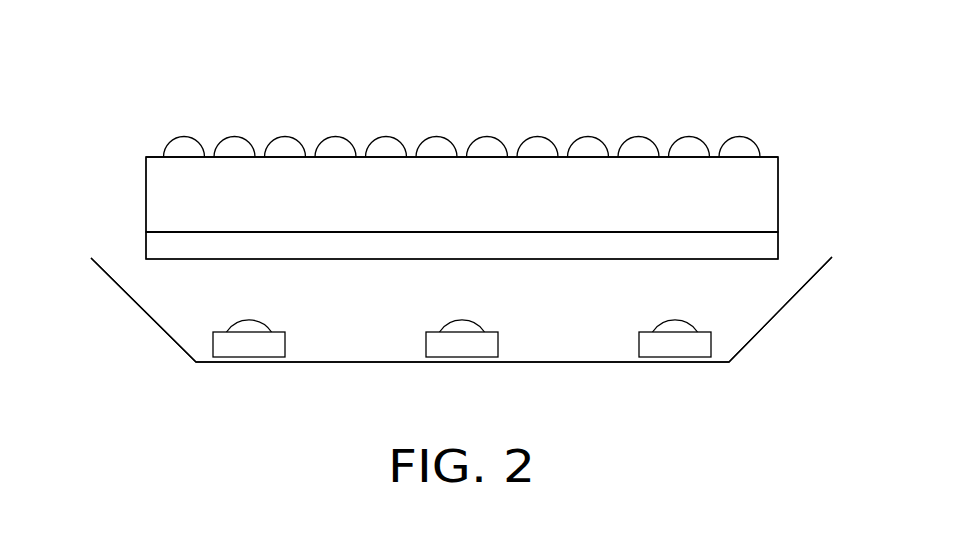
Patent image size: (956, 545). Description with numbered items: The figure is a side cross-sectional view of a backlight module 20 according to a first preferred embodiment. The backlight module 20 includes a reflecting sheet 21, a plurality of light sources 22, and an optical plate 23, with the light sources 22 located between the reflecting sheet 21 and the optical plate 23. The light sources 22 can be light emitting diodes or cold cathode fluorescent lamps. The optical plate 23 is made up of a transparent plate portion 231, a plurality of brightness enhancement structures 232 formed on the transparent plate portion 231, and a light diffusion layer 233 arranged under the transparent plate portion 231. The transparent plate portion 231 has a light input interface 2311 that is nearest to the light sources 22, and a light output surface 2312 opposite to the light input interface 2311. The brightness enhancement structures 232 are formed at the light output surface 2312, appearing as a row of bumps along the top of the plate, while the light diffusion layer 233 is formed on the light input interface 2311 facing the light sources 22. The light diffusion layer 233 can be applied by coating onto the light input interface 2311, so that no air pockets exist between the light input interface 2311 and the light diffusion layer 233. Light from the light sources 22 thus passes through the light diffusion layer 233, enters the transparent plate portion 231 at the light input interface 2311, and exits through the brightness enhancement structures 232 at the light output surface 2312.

The backlight module 20 is at (461, 193).
The reflecting sheet 21 is at (313, 362).
The light sources 22 is at (678, 348).
The optical plate 23 is at (135, 175).
The transparent plate portion 231 is at (762, 192).
The light input interface 2311 is at (163, 234).
The light output surface 2312 is at (770, 152).
The brightness enhancement structures 232 is at (695, 150).
The light diffusion layer 233 is at (765, 247).